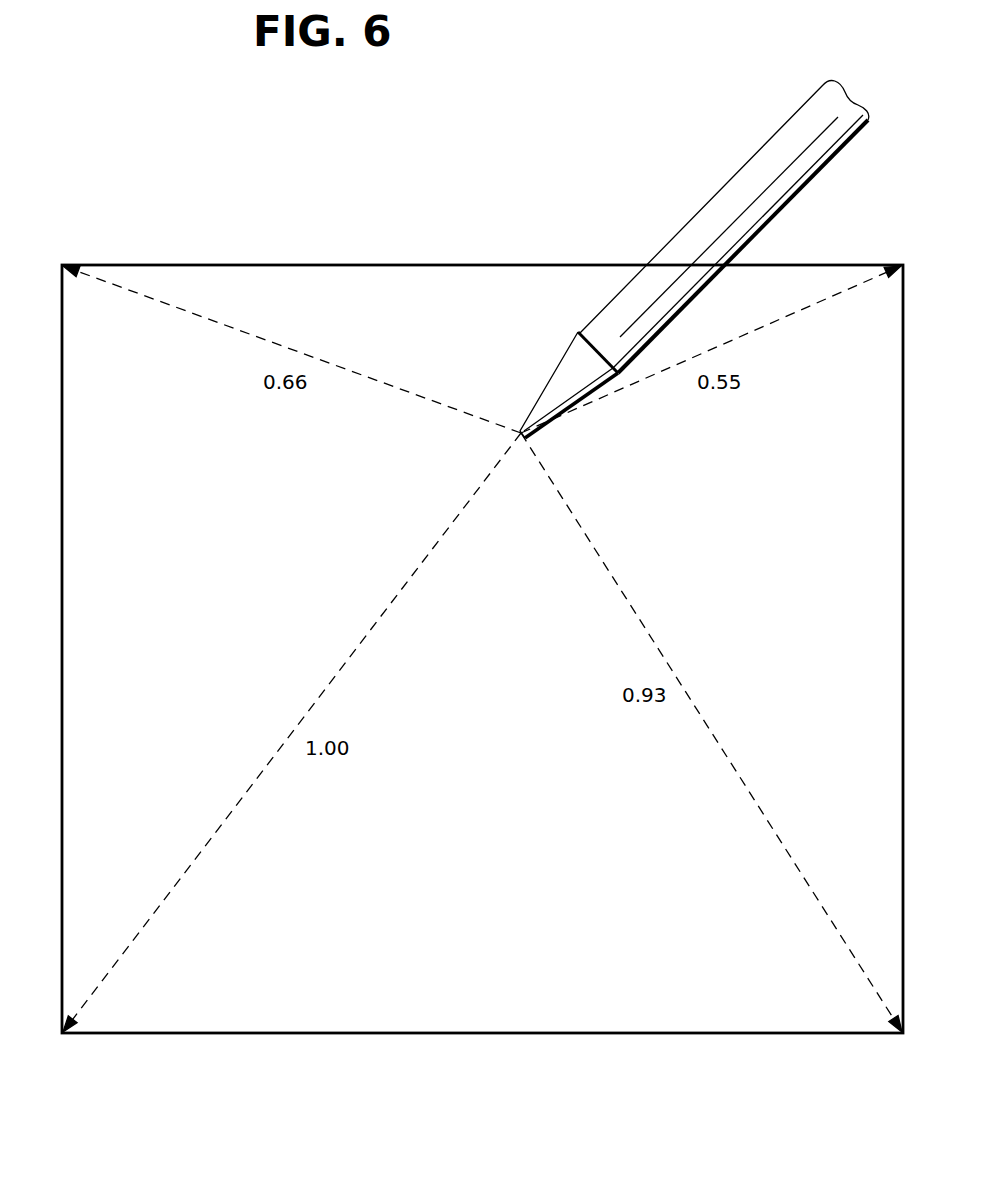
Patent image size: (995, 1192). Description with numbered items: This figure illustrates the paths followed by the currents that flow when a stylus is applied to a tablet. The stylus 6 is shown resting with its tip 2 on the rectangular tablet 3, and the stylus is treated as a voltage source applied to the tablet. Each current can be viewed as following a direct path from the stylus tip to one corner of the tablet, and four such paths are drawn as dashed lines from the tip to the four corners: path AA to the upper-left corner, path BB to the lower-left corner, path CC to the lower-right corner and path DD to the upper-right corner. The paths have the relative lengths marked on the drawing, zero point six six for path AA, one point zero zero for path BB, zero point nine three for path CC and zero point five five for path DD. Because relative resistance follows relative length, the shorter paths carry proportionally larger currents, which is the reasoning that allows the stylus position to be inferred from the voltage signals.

The pen tip 2 is at (550, 372).
The digitizer tablet surface 3 is at (372, 288).
The stylus pen 6 is at (733, 202).
The path AA is at (171, 309).
The path BB is at (163, 909).
The path CC is at (829, 914).
The path DD is at (805, 313).